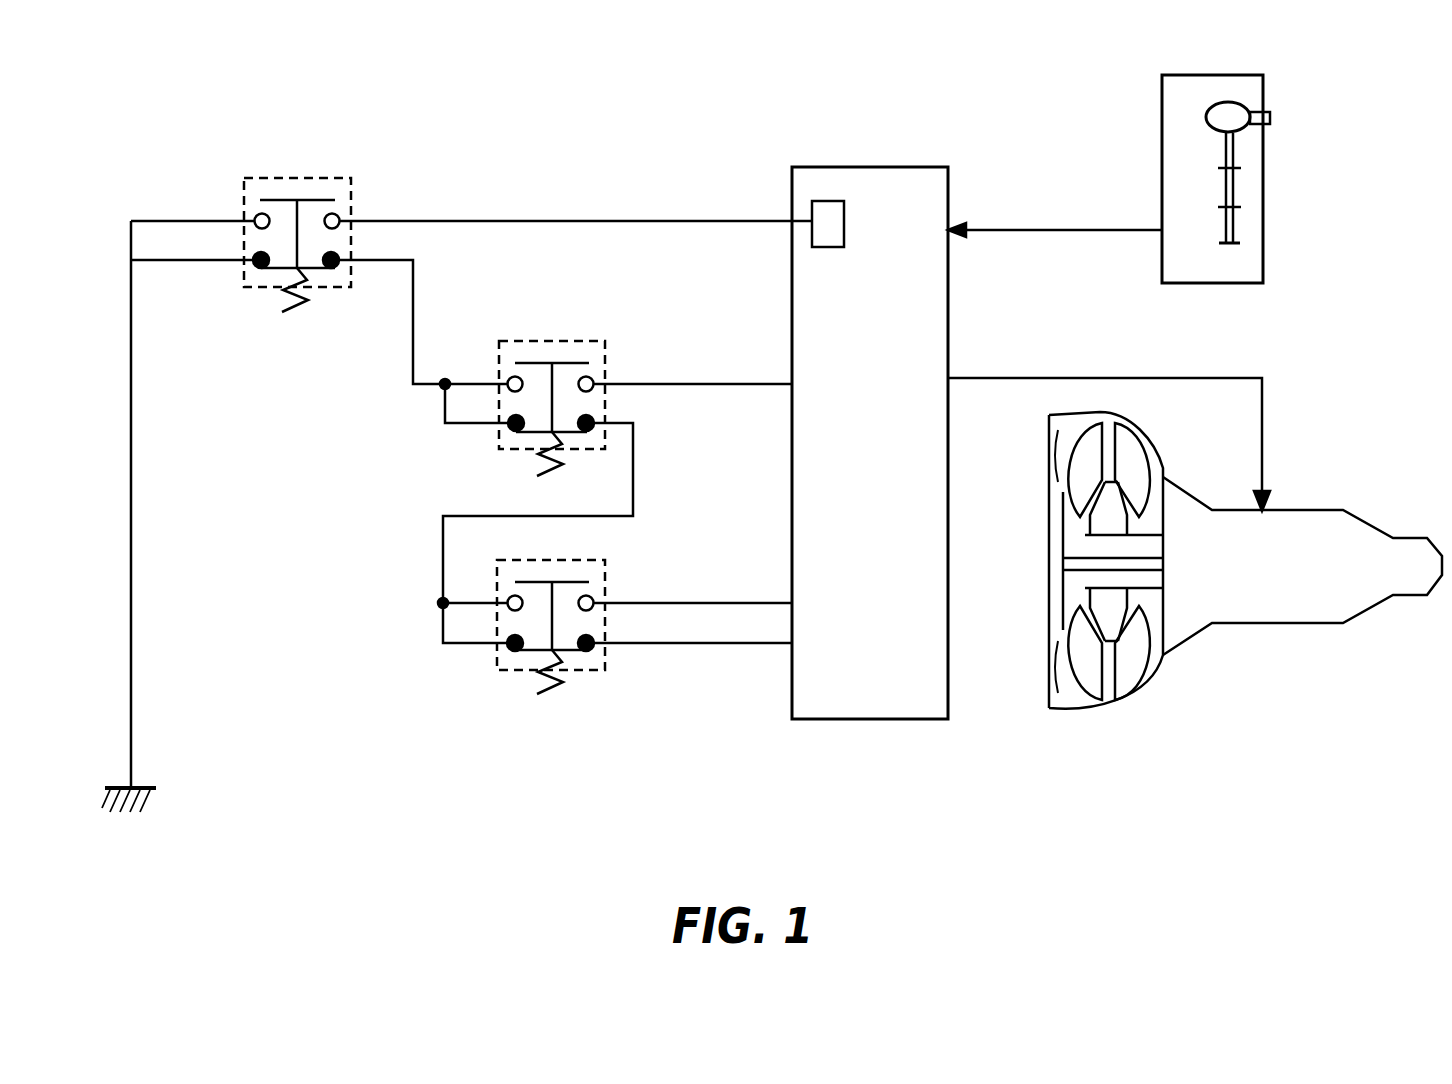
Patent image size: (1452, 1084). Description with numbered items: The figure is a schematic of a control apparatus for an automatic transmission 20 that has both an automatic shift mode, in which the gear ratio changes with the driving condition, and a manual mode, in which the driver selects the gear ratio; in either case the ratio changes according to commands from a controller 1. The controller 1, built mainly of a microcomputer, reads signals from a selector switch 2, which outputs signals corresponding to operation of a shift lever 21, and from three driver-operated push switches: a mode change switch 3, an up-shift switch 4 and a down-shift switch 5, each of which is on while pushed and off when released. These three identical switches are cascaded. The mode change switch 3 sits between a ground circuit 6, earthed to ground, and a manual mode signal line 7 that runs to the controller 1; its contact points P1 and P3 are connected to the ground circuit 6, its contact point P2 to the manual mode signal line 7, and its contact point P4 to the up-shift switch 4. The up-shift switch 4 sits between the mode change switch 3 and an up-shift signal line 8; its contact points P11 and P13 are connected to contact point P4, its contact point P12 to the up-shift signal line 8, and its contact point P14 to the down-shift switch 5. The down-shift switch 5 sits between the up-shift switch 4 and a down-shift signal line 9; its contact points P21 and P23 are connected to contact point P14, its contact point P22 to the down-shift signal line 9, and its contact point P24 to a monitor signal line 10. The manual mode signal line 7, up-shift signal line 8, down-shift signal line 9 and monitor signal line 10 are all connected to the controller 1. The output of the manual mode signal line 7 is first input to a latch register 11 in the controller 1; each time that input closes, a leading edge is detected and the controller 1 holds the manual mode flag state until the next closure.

The controller 1 is at (876, 424).
The selector switch 2 is at (1162, 110).
The mode change switch 3 is at (302, 176).
The up-shift switch 4 is at (556, 338).
The down-shift switch 5 is at (603, 556).
The ground circuit 6 is at (133, 589).
The manual mode signal line 7 is at (557, 220).
The up-shift signal line 8 is at (693, 384).
The down-shift signal line 9 is at (693, 603).
The monitor signal line 10 is at (677, 644).
The latch register 11 is at (812, 206).
The automatic transmission 20 is at (1297, 510).
The shift lever 21 is at (1230, 113).
The contact point P1 is at (258, 214).
The contact point P2 is at (336, 213).
The contact point P3 is at (256, 268).
The contact point P4 is at (333, 268).
The contact point P11 is at (511, 377).
The contact point P12 is at (591, 377).
The contact point P13 is at (511, 432).
The contact point P14 is at (586, 432).
The contact point P21 is at (511, 597).
The contact point P22 is at (591, 597).
The contact point P23 is at (513, 652).
The contact point P24 is at (588, 652).